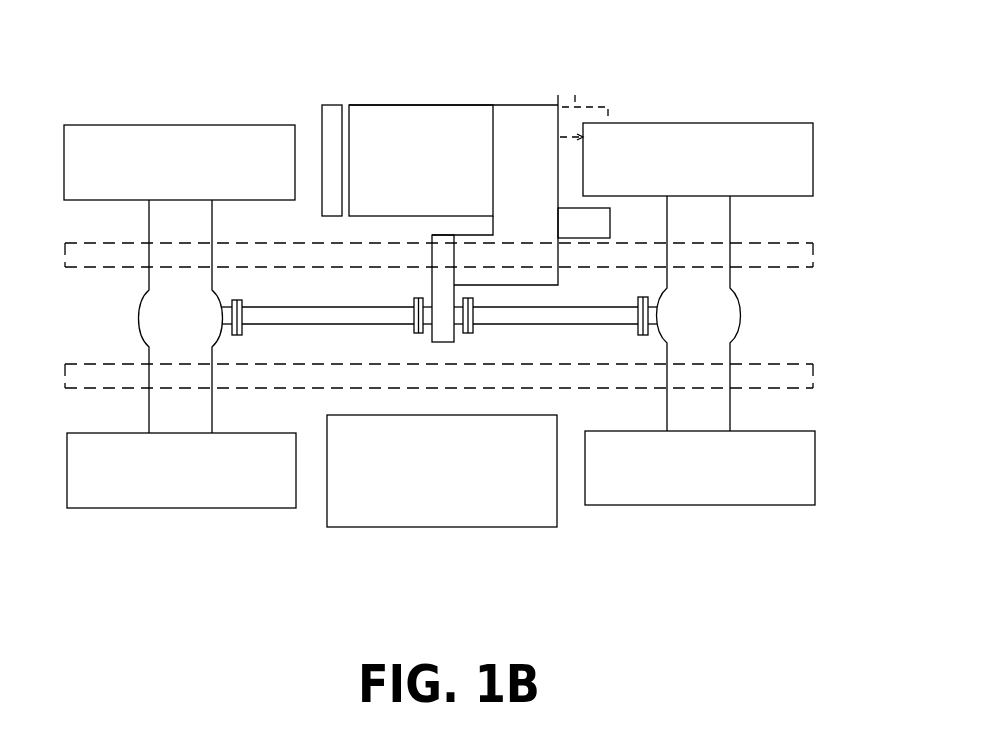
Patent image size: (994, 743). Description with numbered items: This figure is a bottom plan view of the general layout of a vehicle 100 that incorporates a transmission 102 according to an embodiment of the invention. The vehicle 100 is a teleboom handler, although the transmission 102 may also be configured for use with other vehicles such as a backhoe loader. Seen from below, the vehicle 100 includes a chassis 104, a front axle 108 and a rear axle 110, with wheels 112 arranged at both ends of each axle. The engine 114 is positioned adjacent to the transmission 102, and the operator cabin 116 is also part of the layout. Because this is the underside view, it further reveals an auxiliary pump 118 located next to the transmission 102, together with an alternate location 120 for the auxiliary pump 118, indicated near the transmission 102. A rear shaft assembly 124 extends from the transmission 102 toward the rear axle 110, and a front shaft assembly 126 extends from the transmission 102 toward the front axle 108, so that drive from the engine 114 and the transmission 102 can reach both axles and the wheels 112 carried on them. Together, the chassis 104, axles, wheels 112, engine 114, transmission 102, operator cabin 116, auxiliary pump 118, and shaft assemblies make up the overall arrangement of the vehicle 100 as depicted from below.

The vehicle 100 is at (714, 64).
The transmission 102 is at (545, 161).
The chassis 104 is at (793, 250).
The front axle 108 is at (716, 409).
The rear axle 110 is at (166, 413).
The wheels 112 is at (180, 174).
The engine 114 is at (427, 172).
The operator cabin 116 is at (439, 482).
The auxiliary pump 118 is at (602, 233).
The alternate location 120 is at (578, 93).
The rear shaft assembly 124 is at (348, 282).
The front shaft assembly 126 is at (557, 318).